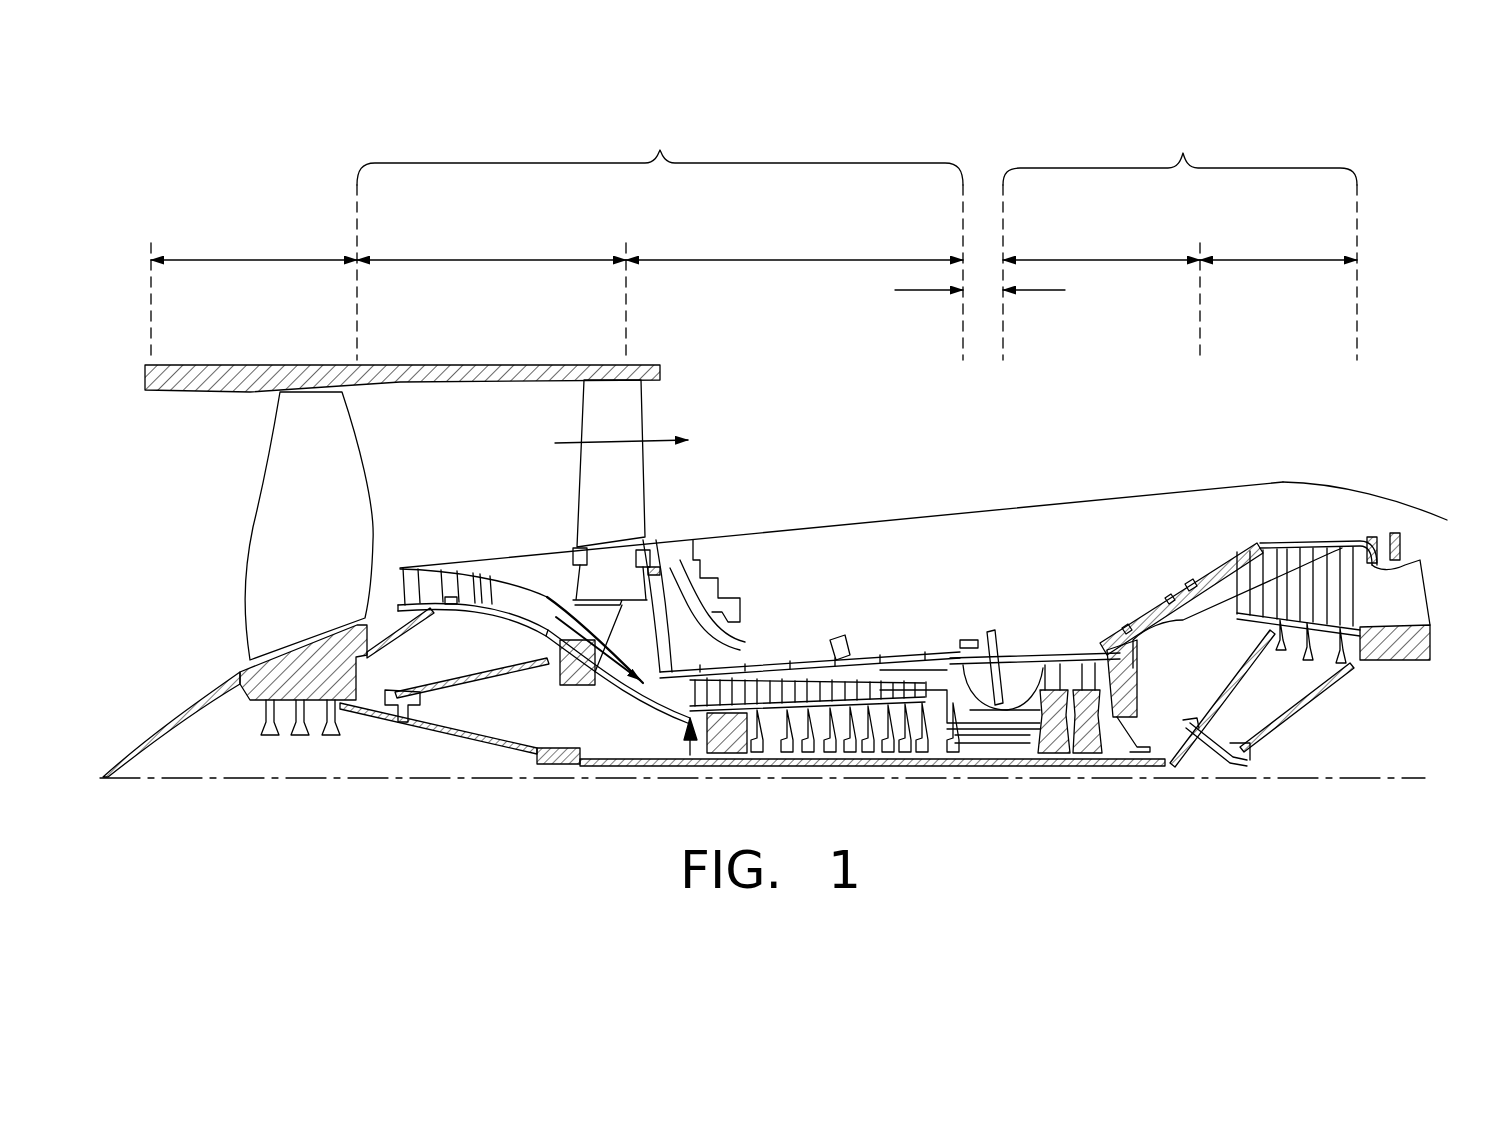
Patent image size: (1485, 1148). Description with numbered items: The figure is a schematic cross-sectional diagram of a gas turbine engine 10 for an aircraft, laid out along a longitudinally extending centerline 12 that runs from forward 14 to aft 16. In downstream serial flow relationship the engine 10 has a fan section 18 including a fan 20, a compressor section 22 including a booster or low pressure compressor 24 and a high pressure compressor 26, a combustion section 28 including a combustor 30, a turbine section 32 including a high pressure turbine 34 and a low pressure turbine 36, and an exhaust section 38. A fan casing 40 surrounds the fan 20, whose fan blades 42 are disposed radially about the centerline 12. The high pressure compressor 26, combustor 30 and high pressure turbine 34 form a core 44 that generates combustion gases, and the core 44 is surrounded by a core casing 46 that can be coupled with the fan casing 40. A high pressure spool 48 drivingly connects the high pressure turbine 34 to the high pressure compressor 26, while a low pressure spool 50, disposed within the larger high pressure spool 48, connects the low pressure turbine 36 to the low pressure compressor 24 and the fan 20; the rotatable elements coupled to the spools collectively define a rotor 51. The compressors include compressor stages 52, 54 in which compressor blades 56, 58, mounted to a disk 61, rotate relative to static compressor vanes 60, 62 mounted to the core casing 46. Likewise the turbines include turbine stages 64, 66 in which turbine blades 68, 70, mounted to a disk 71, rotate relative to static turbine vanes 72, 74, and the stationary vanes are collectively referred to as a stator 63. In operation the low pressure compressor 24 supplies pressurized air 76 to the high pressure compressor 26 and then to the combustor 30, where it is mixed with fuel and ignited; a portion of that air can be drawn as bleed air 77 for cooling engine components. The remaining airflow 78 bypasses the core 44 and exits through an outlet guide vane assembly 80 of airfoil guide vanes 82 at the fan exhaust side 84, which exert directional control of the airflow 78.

The gas turbine engine 10 is at (1372, 290).
The centerline 12 is at (232, 780).
The forward 14 is at (184, 505).
The aft 16 is at (1462, 594).
The fan section 18 is at (255, 260).
The fan 20 is at (228, 627).
The compressor section 22 is at (660, 150).
The low pressure compressor 24 is at (495, 260).
The high pressure compressor 26 is at (795, 260).
The combustion section 28 is at (910, 290).
The combustor 30 is at (1003, 668).
The turbine section 32 is at (1183, 153).
The high pressure turbine 34 is at (1102, 260).
The low pressure turbine 36 is at (1277, 260).
The exhaust section 38 is at (1420, 573).
The fan casing 40 is at (395, 363).
The fan blades 42 is at (333, 437).
The core 44 is at (922, 548).
The core casing 46 is at (1175, 590).
The high pressure spool 48 is at (985, 722).
The low pressure spool 50 is at (555, 765).
The rotor 51 is at (822, 770).
The compressor stages 52 is at (590, 638).
The compressor stages 54 is at (850, 647).
The compressor blades 56 is at (437, 580).
The compressor blades 58 is at (828, 638).
The static compressor vanes 60 is at (412, 582).
The disk 61 is at (452, 610).
The static compressor vanes 62 is at (738, 653).
The stator 63 is at (1258, 545).
The turbine stages 64 is at (1071, 648).
The turbine stages 66 is at (1283, 480).
The turbine blades 68 is at (1078, 662).
The turbine blades 70 is at (1327, 548).
The disk 71 is at (1260, 625).
The static turbine vanes 72 is at (1045, 662).
The static turbine vanes 74 is at (1307, 581).
The pressurized air 76 is at (610, 678).
The bleed air 77 is at (820, 660).
The airflow 78 is at (572, 443).
The outlet guide vane assembly 80 is at (652, 505).
The airfoil guide vanes 82 is at (592, 476).
The fan exhaust side 84 is at (663, 418).